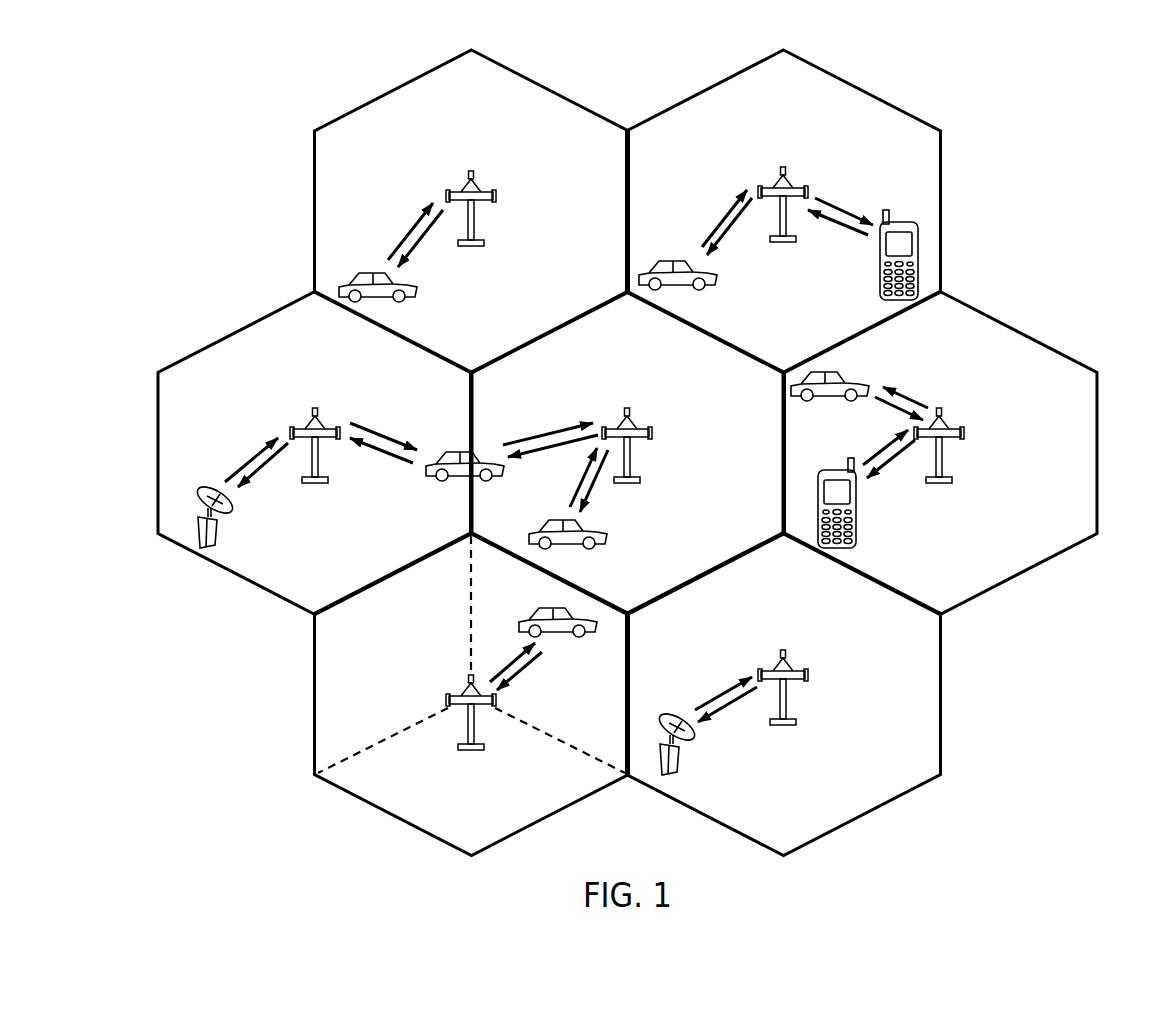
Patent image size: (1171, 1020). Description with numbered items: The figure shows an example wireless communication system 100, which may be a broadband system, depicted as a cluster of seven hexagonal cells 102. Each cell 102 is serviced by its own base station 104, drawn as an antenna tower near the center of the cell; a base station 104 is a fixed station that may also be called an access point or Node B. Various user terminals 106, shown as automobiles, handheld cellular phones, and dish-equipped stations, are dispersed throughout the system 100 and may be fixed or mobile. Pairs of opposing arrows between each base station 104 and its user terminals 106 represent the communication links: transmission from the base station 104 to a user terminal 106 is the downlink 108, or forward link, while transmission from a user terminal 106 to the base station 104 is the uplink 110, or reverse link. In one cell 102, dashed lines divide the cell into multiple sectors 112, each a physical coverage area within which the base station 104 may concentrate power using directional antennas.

The wireless communication system 100 is at (1120, 103).
The cell 102 is at (403, 83).
The base station 104 is at (471, 170).
The user terminal 106 is at (416, 296).
The downlink 108 is at (415, 242).
The uplink 110 is at (413, 228).
The sector 112 is at (527, 812).